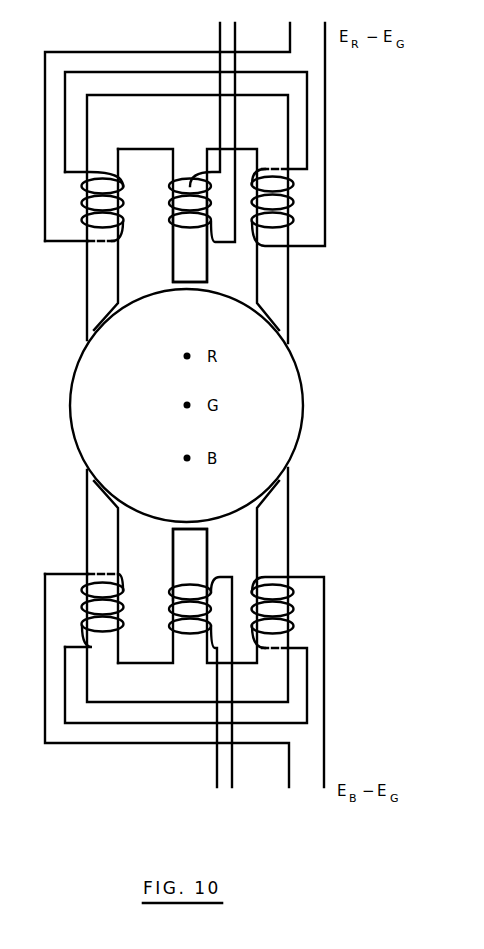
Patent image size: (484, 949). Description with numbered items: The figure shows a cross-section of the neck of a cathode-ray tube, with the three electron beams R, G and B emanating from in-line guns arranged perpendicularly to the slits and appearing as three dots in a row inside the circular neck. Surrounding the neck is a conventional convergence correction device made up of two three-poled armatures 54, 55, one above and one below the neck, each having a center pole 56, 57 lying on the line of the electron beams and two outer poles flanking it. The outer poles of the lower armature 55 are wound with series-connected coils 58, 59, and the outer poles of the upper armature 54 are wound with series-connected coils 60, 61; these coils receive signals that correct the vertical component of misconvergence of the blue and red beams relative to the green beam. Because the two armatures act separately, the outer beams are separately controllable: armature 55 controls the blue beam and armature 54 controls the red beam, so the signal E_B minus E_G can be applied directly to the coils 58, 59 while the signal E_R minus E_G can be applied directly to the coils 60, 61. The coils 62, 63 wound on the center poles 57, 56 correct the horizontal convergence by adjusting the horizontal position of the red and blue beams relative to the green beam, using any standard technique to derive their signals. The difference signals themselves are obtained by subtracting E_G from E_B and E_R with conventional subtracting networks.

The three-poled armature 54 is at (166, 128).
The three-poled armature 55 is at (164, 693).
The center pole 56 is at (198, 557).
The center pole 57 is at (197, 272).
The coil 58 is at (63, 572).
The coil 59 is at (303, 575).
The coil 60 is at (68, 247).
The coil 61 is at (303, 250).
The coil 62 is at (222, 247).
The coil 63 is at (213, 575).